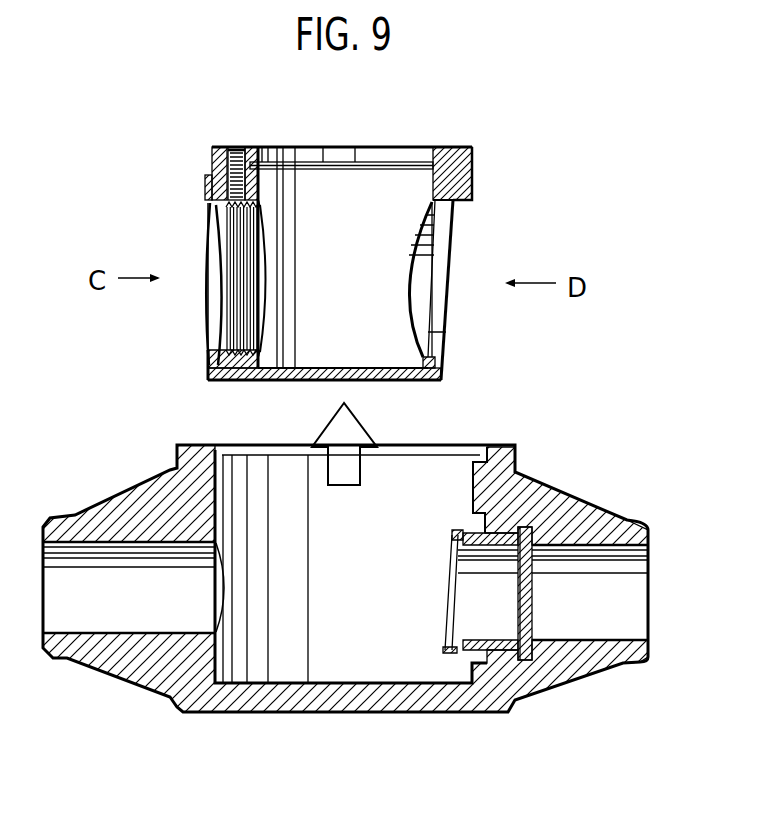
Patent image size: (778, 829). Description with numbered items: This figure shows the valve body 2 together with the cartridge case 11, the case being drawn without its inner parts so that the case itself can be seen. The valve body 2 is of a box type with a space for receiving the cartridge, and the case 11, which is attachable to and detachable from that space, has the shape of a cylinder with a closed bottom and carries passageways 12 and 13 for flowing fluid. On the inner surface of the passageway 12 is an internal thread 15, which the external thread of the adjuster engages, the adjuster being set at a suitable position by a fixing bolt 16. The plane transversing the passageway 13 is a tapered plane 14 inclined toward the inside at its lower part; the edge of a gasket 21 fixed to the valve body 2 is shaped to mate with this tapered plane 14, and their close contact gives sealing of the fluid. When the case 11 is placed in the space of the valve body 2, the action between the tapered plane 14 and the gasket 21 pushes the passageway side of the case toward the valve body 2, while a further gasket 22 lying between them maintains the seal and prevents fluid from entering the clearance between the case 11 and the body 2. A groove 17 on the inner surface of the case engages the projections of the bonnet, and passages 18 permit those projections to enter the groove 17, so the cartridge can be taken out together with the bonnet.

The valve body 2 is at (498, 447).
The case 11 is at (392, 127).
The passageway 12 is at (206, 293).
The passageway 13 is at (453, 297).
The tapered plane 14 is at (439, 205).
The internal thread 15 is at (258, 275).
The fixing bolt 16 is at (234, 146).
The groove 17 is at (307, 169).
The passages 18 is at (343, 157).
The gasket 21 is at (452, 537).
The gasket 22 is at (205, 180).